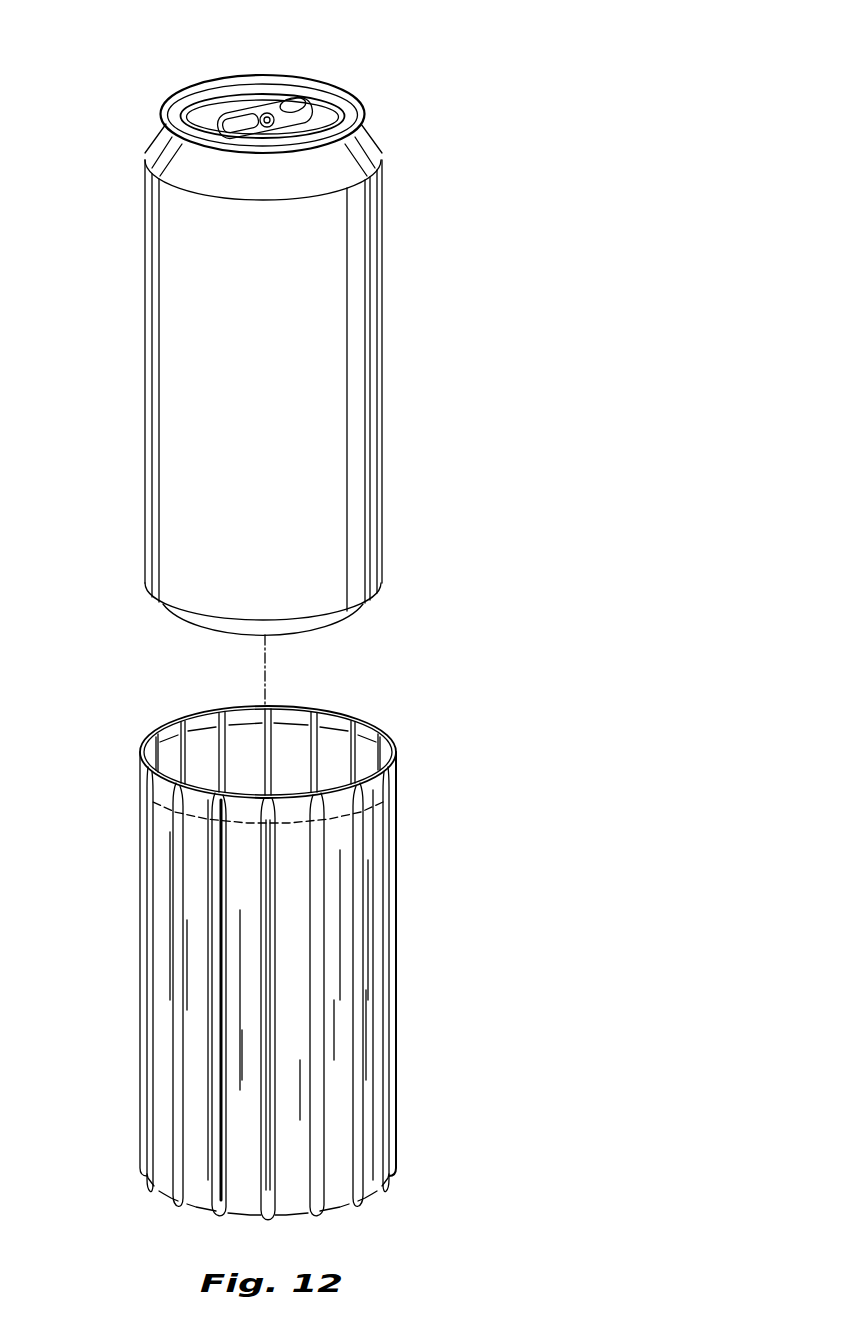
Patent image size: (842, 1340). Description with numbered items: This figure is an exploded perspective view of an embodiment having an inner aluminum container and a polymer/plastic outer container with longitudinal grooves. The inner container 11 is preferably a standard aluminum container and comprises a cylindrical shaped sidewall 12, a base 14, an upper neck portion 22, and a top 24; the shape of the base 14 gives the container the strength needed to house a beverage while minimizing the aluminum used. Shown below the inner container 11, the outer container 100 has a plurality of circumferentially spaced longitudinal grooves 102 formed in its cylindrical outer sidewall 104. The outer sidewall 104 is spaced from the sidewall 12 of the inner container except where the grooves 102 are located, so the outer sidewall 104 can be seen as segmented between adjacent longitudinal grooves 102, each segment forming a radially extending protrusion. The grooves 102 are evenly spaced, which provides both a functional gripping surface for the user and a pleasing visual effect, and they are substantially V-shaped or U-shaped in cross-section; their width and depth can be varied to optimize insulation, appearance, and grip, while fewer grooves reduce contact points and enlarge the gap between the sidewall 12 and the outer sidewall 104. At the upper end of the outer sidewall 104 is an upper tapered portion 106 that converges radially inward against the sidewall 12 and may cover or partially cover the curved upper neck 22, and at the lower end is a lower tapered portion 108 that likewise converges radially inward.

The inner container 11 is at (308, 318).
The sidewall 12 is at (277, 383).
The base 14 is at (248, 620).
The upper neck portion 22 is at (374, 143).
The top 24 is at (255, 80).
The outer container 100 is at (295, 965).
The longitudinal grooves 102 is at (217, 718).
The outer sidewall 104 is at (293, 742).
The upper tapered portion 106 is at (162, 795).
The lower tapered portion 108 is at (240, 1208).